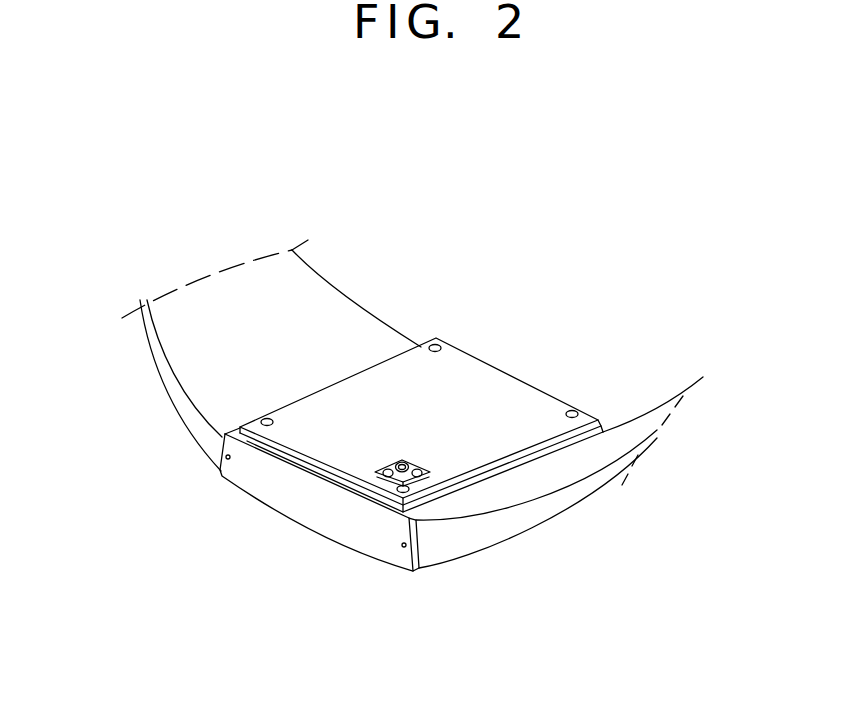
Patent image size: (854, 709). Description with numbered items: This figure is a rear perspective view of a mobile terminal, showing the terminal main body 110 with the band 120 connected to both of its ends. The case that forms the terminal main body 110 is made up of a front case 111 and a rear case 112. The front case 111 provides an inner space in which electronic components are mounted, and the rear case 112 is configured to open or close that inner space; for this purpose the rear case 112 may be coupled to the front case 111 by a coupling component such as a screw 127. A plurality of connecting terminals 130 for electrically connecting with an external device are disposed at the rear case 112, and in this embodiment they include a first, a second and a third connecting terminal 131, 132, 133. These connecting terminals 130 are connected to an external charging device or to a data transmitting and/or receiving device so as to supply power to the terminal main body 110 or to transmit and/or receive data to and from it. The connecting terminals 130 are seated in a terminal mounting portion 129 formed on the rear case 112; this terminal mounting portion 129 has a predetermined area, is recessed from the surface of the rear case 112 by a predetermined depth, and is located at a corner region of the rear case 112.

The terminal main body 110 is at (400, 483).
The front case 111 is at (293, 502).
The rear case 112 is at (292, 455).
The band 120 is at (313, 297).
The screw 127 is at (573, 409).
The terminal mounting portion 129 is at (398, 478).
The connecting terminals 130 is at (444, 364).
The first connecting terminal 131 is at (388, 469).
The second connecting terminal 132 is at (403, 462).
The third connecting terminal 133 is at (418, 469).